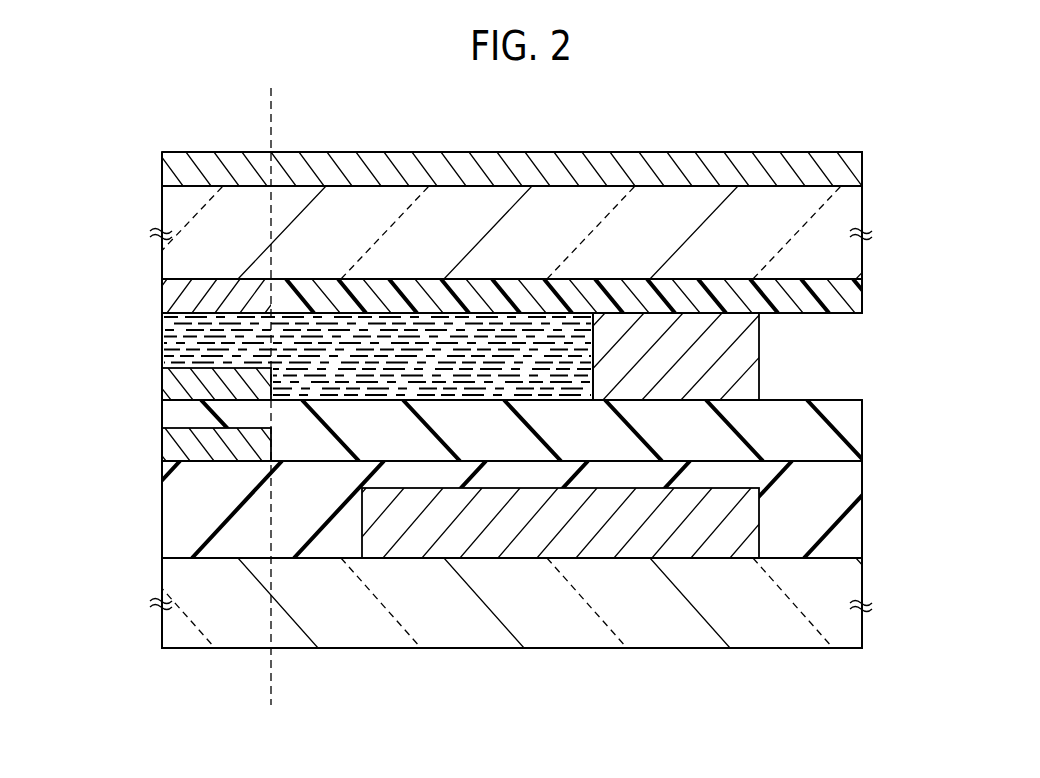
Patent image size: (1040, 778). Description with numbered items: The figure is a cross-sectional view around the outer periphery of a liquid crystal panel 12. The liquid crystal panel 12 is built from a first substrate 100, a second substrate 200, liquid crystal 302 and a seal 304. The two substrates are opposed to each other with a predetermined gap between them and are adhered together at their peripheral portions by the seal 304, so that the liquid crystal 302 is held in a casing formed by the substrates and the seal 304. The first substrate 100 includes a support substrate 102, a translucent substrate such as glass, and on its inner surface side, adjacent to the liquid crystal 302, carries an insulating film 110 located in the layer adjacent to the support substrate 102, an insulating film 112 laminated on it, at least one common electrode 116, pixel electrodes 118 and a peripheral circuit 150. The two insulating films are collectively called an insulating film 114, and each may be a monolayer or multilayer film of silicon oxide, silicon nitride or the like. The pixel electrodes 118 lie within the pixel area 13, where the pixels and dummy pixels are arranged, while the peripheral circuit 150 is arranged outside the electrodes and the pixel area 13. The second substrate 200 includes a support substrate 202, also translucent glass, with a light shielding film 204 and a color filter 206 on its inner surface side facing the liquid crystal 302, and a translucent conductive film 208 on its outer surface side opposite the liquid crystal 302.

The liquid crystal panel 12 is at (745, 115).
The pixel area 13 is at (145, 708).
The first substrate 100 is at (860, 660).
The support substrate 102 is at (852, 632).
The insulating film 110 is at (845, 498).
The insulating film 112 is at (850, 433).
The insulating film 114 is at (962, 432).
The common electrode 116 is at (167, 443).
The pixel electrodes 118 is at (167, 375).
The peripheral circuit 150 is at (540, 543).
The second substrate 200 is at (848, 152).
The support substrate 202 is at (855, 210).
The light shielding film 204 is at (855, 303).
The color filter 206 is at (167, 295).
The translucent conductive film 208 is at (167, 176).
The liquid crystal 302 is at (167, 325).
The seal 304 is at (745, 352).